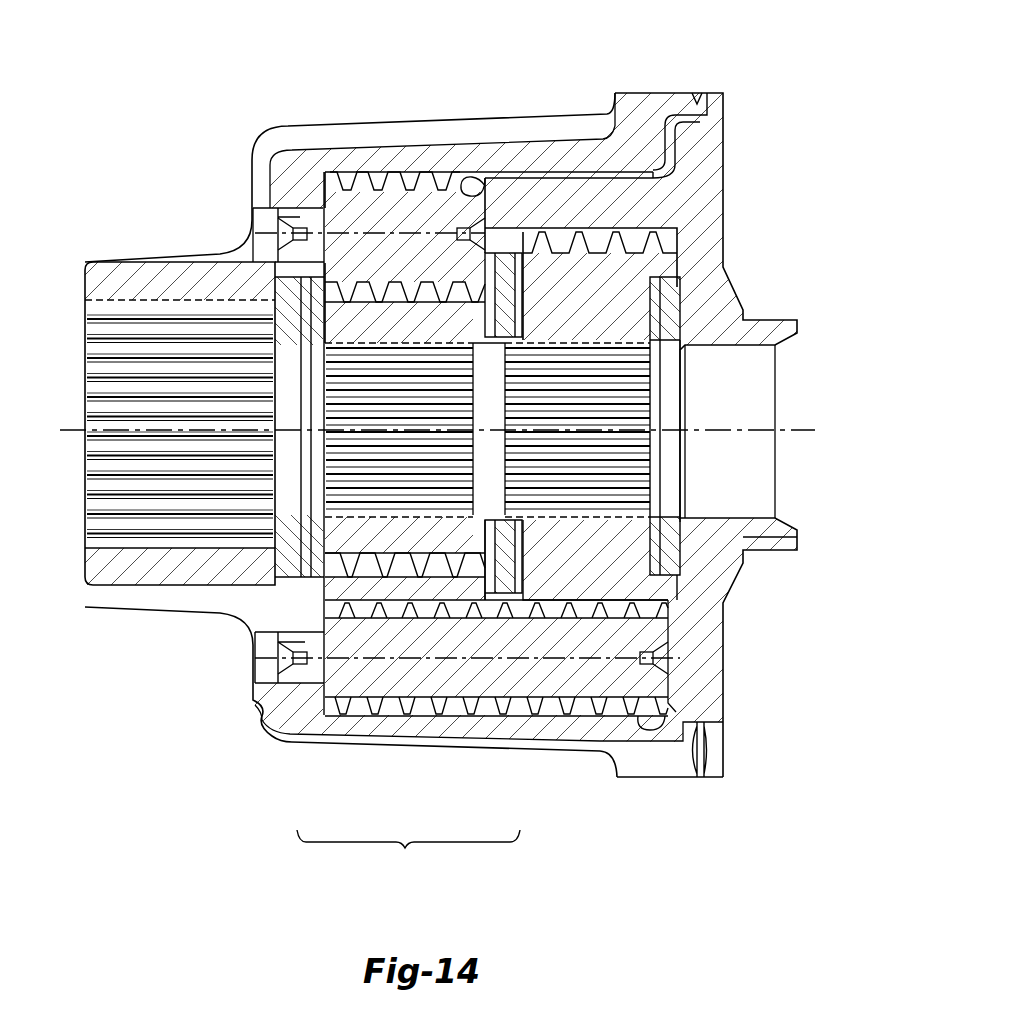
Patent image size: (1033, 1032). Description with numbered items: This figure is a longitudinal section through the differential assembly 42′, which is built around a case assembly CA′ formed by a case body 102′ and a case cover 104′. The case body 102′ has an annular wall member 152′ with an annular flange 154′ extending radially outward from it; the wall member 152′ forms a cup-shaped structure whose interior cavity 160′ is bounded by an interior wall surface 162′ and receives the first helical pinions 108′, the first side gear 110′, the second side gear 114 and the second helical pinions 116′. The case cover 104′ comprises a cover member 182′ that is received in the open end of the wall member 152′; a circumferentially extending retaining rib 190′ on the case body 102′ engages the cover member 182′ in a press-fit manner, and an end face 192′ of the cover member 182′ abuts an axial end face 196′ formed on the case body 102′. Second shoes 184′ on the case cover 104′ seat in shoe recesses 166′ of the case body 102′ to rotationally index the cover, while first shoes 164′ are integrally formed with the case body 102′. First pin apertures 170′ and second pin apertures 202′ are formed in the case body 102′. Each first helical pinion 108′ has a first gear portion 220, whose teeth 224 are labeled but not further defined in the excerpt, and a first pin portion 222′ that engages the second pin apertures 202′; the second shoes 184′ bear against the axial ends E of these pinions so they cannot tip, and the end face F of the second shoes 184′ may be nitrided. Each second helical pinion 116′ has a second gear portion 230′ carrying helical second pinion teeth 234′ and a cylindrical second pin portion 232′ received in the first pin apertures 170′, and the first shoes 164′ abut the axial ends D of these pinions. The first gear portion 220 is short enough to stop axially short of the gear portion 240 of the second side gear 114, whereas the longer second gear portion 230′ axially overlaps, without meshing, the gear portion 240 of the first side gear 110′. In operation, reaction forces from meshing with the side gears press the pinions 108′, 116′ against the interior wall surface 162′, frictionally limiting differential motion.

The differential assembly 42′ is at (201, 95).
The interior cavity 160′ is at (70, 297).
The case body 102′ is at (273, 775).
The case cover 104′ is at (710, 775).
The first helical pinions 108′ is at (367, 217).
The first side gear 110′ is at (333, 533).
The second side gear 114 is at (610, 298).
The second helical pinions 116′ is at (552, 685).
The annular wall member 152′ is at (372, 157).
The annular flange 154′ is at (663, 100).
The interior wall surface 162′ is at (500, 717).
The first shoes 164′ is at (310, 707).
The shoe recesses 166′ is at (507, 177).
The first pin apertures 170′ is at (262, 671).
The cover member 182′ is at (708, 227).
The second shoes 184′ is at (595, 202).
The retaining rib 190′ is at (700, 750).
The end face 192′ is at (700, 108).
The axial end face 196′ is at (709, 112).
The second pin apertures 202′ is at (262, 240).
The first gear portion 220 is at (413, 215).
The first pin portions 222′ is at (273, 214).
The threads 224 is at (352, 175).
The second gear portion 230′ is at (620, 643).
The second pin portion 232′ is at (303, 642).
The second pinion teeth 234′ is at (673, 717).
The gear portion 240 is at (625, 246).
The case assembly CA′ is at (408, 851).
The axial ends D is at (318, 693).
The axial ends E is at (487, 213).
The end face F is at (465, 186).